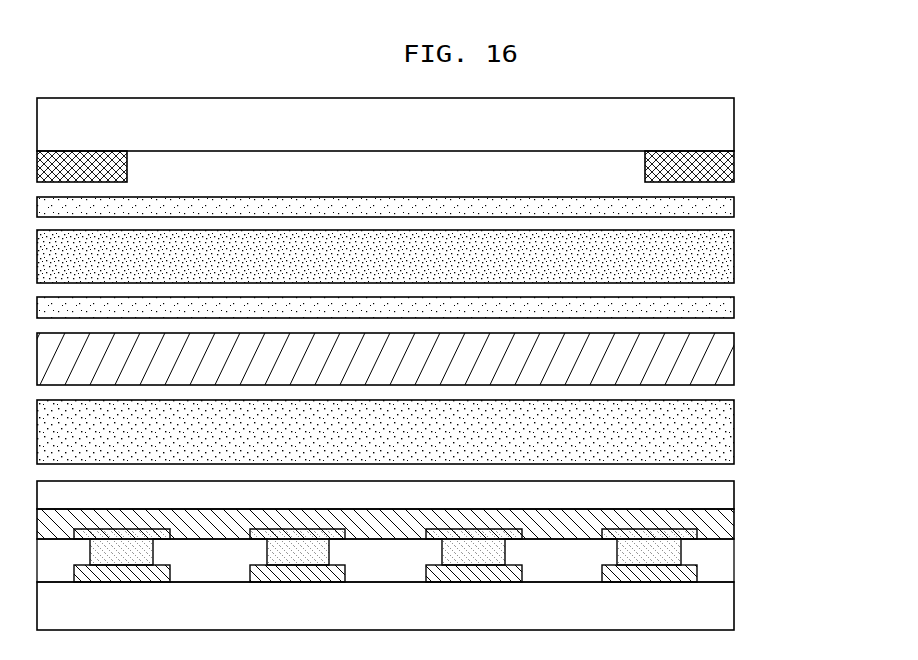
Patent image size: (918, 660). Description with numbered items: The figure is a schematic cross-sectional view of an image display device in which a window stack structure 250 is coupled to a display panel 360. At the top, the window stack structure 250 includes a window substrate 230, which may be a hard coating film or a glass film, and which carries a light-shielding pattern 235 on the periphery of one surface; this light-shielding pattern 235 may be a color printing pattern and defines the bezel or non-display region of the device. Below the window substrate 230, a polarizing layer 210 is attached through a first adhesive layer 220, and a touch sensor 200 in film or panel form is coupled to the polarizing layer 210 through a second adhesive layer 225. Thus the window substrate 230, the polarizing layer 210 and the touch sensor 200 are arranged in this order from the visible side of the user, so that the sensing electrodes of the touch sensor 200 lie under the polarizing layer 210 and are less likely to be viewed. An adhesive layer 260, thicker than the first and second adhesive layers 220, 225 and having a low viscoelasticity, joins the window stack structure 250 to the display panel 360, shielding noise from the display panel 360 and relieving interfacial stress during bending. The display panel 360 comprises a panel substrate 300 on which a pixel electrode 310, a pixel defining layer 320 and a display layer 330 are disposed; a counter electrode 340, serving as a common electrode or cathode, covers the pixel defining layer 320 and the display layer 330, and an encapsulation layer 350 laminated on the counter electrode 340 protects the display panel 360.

The touch sensor 200 is at (730, 354).
The polarizing layer 210 is at (730, 256).
The first adhesive layer 220 is at (730, 205).
The second adhesive layer 225 is at (730, 308).
The window substrate 230 is at (728, 127).
The light-shielding pattern 235 is at (730, 165).
The window stack structure 250 is at (837, 118).
The adhesive layer 260 is at (730, 432).
The panel substrate 300 is at (728, 605).
The pixel electrode 310 is at (700, 569).
The pixel defining layer 320 is at (730, 550).
The display layer 330 is at (662, 533).
The counter electrode 340 is at (723, 520).
The encapsulation layer 350 is at (727, 495).
The display panel 360 is at (836, 462).